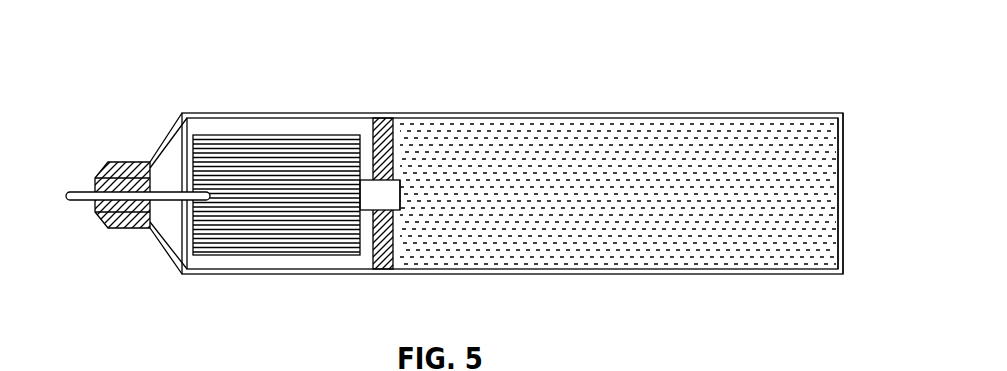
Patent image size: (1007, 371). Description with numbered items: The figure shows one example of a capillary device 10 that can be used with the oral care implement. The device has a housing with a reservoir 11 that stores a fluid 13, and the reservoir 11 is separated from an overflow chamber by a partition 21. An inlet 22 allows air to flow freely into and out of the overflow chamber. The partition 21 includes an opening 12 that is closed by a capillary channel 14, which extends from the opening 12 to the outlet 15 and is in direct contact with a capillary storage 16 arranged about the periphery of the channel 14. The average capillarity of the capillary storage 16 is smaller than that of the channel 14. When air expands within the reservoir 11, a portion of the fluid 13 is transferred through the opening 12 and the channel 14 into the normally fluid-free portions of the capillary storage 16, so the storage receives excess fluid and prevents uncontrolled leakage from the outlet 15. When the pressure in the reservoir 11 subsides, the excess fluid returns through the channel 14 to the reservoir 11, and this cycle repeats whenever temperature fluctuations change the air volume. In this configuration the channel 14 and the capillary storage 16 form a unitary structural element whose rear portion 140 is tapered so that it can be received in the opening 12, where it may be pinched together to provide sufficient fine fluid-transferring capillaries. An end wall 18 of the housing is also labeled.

The capillary device 10 is at (117, 57).
The reservoir 11 is at (800, 113).
The opening 12 is at (399, 212).
The fluid 13 is at (623, 247).
The capillary channel 14 is at (181, 223).
The outlet 15 is at (78, 202).
The capillary storage 16 is at (273, 259).
The end wall 18 is at (843, 150).
The partition 21 is at (389, 119).
The inlet 22 is at (100, 177).
The rear portion 140 is at (380, 197).